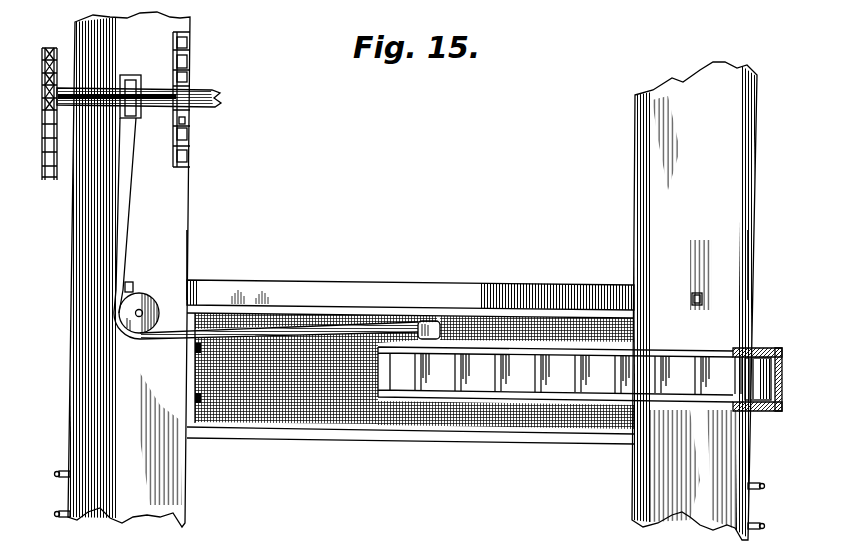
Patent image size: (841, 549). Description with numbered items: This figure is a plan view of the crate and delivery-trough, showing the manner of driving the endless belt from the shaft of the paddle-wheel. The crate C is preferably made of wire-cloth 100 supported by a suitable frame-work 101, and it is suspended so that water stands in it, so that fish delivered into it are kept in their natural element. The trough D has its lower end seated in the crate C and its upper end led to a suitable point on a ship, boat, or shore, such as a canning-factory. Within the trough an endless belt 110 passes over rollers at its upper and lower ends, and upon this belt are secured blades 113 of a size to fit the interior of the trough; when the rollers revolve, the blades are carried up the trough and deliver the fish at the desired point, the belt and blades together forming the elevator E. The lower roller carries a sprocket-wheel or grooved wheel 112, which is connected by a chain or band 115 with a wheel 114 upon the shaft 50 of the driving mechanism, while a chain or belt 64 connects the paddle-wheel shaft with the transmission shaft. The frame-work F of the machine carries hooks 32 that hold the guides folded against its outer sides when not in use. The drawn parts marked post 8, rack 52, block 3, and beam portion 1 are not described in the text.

The post 8 is at (412, 276).
The rack lower portion 64 is at (44, 153).
The bar 50 is at (208, 95).
The bracket 114 is at (136, 78).
The rack 52 is at (187, 78).
The lever rod 115 is at (128, 163).
The pivot block 3 is at (134, 285).
The post face F is at (178, 266).
The beam 101 is at (410, 295).
The beam portion 1 is at (521, 288).
The beam lower portion C is at (486, 313).
The rod head 112 is at (419, 321).
The rail D is at (660, 351).
The chain E is at (439, 371).
The chain pins 113 is at (586, 362).
The end bracket 110 is at (752, 379).
The plate 100 is at (343, 428).
The bolts 32 is at (61, 508).